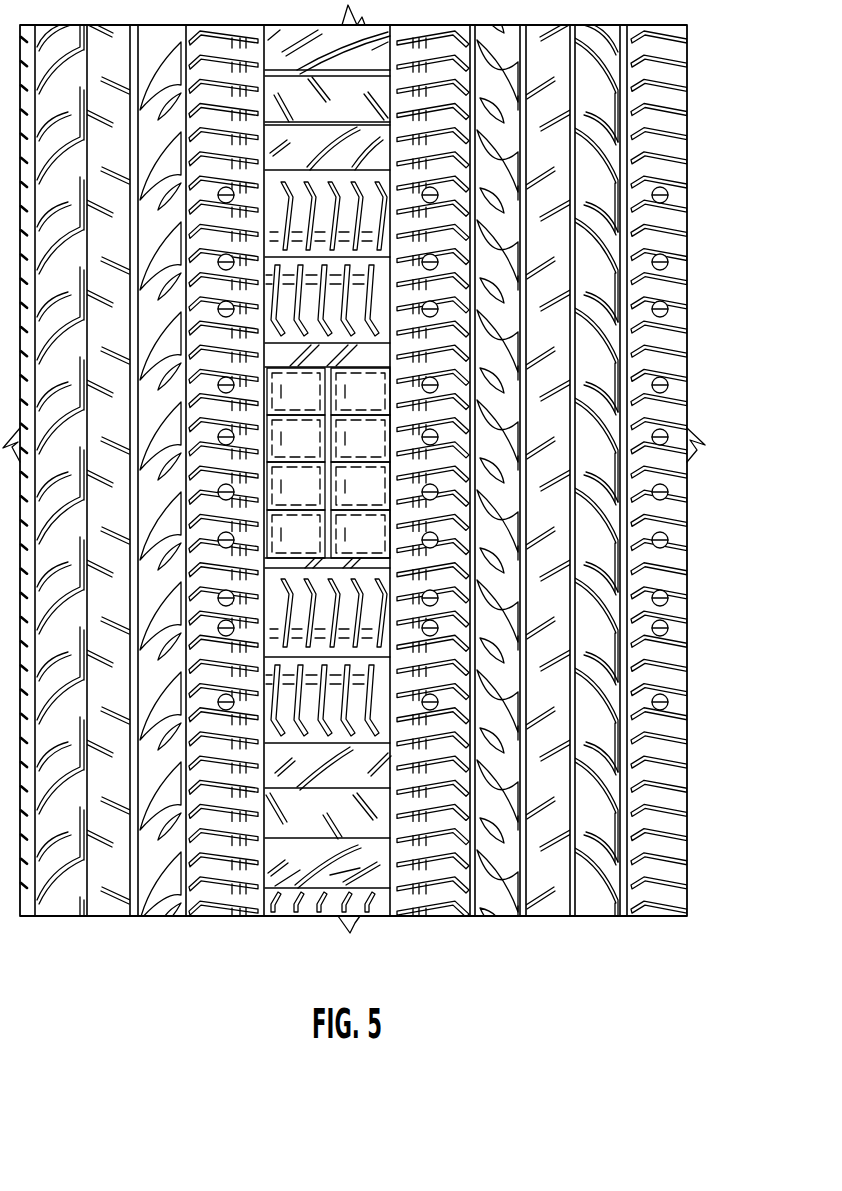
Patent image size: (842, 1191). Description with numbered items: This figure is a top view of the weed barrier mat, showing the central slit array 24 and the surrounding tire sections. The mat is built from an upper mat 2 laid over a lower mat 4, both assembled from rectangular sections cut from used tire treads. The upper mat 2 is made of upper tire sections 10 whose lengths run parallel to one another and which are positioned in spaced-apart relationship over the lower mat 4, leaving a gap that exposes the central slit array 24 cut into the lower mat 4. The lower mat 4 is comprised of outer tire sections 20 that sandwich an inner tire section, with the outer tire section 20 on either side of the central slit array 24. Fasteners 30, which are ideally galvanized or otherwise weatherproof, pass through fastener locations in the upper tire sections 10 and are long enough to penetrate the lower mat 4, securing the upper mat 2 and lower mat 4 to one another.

The upper mat 2 is at (137, 917).
The lower mat 4 is at (370, 918).
The upper tire section 10 is at (604, 287).
The outer tire section 20 is at (322, 882).
The central slit array 24 is at (346, 607).
The fastener 30 is at (432, 710).